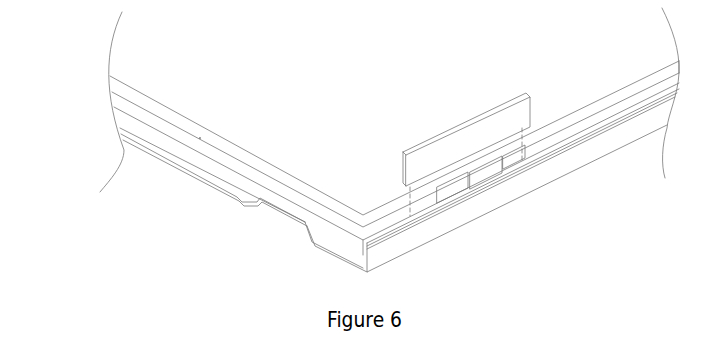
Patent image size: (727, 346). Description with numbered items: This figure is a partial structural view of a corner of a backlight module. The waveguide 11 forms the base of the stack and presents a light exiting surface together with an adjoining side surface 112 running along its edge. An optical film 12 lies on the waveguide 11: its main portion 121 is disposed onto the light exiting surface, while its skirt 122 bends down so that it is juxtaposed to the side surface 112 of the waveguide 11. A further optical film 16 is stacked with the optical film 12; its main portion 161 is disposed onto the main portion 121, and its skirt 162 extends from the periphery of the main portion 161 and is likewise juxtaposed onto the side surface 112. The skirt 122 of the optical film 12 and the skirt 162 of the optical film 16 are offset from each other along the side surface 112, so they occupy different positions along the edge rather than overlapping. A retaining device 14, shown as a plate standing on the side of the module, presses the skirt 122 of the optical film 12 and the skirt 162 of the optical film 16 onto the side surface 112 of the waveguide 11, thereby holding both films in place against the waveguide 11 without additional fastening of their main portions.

The waveguide 11 is at (360, 186).
The side surface 112 is at (373, 238).
The optical film 12 is at (357, 169).
The main portion 121 is at (223, 143).
The skirt 122 is at (458, 190).
The retaining device 14 is at (483, 110).
The optical film 16 is at (383, 123).
The main portion 161 is at (117, 75).
The skirt 162 is at (493, 166).